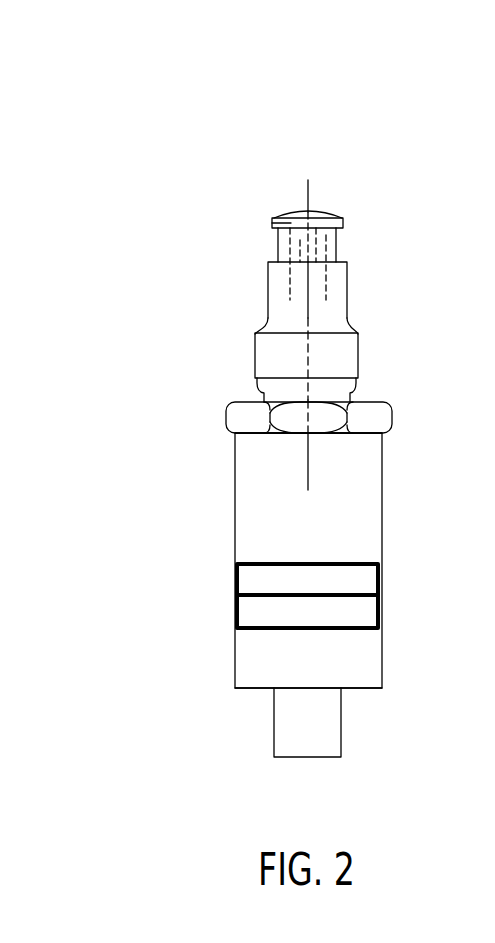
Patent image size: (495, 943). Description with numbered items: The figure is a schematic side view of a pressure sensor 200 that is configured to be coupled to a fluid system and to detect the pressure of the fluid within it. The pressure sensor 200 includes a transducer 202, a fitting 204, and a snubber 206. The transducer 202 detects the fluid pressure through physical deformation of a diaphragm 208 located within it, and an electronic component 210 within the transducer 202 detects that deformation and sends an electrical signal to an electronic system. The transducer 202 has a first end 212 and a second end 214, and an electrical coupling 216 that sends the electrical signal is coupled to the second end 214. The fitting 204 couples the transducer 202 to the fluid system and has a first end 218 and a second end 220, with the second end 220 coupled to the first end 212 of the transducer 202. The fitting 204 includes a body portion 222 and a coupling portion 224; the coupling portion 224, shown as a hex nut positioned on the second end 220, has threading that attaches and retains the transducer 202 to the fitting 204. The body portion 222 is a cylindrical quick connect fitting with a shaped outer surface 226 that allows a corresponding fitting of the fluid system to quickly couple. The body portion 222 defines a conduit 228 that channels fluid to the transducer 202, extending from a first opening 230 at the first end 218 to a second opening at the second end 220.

The pressure sensor 200 is at (108, 73).
The transducer 202 is at (235, 510).
The fitting 204 is at (255, 352).
The snubber 206 is at (331, 201).
The diaphragm 208 is at (237, 580).
The electronic component 210 is at (237, 612).
The first end 212 is at (236, 445).
The second end 214 is at (262, 687).
The electrical coupling 216 is at (274, 728).
The first end 218 is at (277, 243).
The second end 220 is at (266, 412).
The body portion 222 is at (365, 347).
The coupling portion 224 is at (373, 408).
The shaped outer surface 226 is at (347, 281).
The conduit 228 is at (330, 274).
The first opening 230 is at (304, 242).